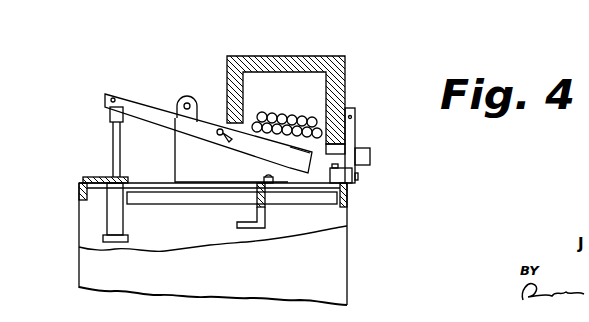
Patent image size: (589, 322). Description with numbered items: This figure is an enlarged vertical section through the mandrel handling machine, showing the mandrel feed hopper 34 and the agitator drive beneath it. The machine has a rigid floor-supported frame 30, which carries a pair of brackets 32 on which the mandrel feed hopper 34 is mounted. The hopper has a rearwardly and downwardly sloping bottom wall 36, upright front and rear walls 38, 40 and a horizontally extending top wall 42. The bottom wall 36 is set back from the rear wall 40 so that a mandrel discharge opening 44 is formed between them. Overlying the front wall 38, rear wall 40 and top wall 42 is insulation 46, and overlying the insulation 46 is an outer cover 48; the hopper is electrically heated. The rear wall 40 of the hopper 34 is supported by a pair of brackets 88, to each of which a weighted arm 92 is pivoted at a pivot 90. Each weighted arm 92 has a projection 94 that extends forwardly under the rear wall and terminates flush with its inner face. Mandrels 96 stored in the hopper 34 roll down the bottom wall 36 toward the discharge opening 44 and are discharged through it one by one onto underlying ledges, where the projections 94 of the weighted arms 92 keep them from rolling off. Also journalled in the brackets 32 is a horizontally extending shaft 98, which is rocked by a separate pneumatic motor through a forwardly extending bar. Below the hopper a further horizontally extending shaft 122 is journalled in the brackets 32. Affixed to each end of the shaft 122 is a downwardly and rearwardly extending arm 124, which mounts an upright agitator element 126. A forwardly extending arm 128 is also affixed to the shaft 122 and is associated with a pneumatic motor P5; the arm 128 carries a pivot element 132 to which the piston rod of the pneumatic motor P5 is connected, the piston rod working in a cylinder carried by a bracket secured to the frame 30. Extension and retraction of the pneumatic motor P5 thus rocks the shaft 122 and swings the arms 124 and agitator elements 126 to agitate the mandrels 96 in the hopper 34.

The frame 30 is at (347, 273).
The brackets 32 is at (188, 152).
The mandrel feed hopper 34 is at (347, 69).
The bottom wall 36 is at (270, 114).
The front wall 38 is at (245, 108).
The rear wall 40 is at (348, 128).
The top wall 42 is at (286, 67).
The mandrel discharge opening 44 is at (317, 170).
The insulation 46 is at (310, 67).
The outer cover 48 is at (253, 60).
The brackets 88 is at (355, 138).
The pivot 90 is at (352, 117).
The weighted arm 92 is at (363, 157).
The projection 94 is at (337, 150).
The mandrels 96 is at (307, 120).
The shaft 98 is at (186, 102).
The shaft 122 is at (218, 129).
The arm 124 is at (268, 148).
The agitator element 126 is at (288, 140).
The arm 128 is at (145, 108).
The pivot element 132 is at (111, 97).
The pneumatic motor P5 is at (103, 214).